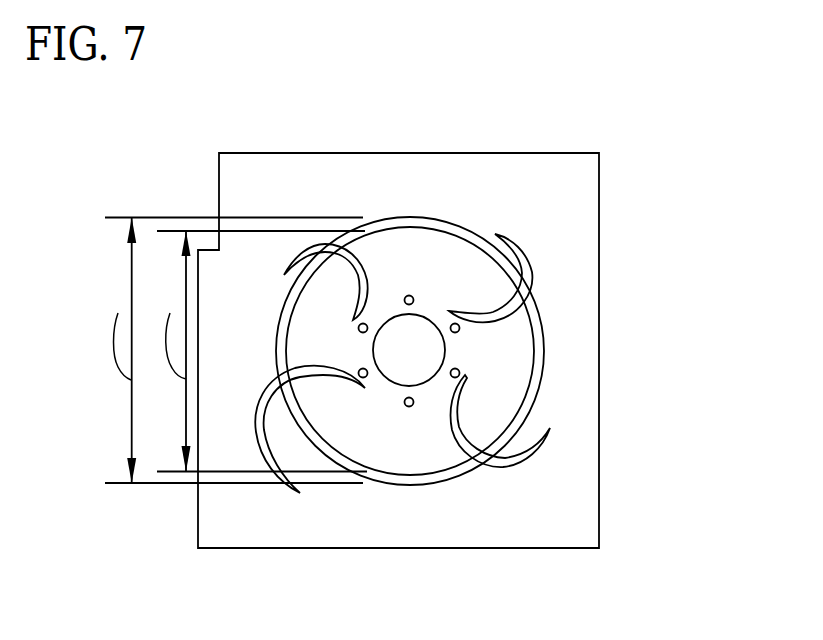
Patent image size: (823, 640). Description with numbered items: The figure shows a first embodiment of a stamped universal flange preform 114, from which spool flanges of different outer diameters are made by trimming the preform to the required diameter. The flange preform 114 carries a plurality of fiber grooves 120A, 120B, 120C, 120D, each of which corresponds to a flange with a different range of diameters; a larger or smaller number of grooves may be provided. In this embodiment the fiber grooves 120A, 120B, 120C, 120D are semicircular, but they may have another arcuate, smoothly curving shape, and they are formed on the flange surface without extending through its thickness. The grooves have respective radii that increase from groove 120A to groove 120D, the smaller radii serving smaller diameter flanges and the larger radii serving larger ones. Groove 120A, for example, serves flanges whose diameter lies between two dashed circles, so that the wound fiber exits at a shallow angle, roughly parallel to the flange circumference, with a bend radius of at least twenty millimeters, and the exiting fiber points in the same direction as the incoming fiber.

The universal flange preform 114 is at (699, 104).
The fiber groove 120A is at (371, 274).
The fiber groove 120B is at (532, 284).
The fiber groove 120C is at (537, 457).
The fiber groove 120D is at (281, 462).